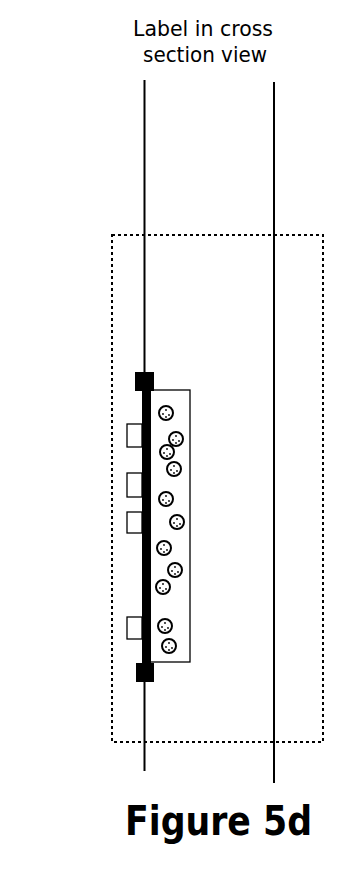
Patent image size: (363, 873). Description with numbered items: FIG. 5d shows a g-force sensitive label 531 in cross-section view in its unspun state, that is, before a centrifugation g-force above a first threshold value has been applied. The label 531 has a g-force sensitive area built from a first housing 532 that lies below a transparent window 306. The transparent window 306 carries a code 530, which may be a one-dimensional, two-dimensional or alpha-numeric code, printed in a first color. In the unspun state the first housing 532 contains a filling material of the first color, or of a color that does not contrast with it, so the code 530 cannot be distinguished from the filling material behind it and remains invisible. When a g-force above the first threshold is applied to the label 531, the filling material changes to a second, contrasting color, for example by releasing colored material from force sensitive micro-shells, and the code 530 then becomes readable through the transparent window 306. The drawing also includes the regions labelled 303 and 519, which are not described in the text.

The g-force sensitive label 531 is at (161, 138).
The label region 303 is at (113, 235).
The conductive end contacts 519 is at (163, 410).
The code 530 is at (127, 437).
The transparent window 306 is at (141, 580).
The first housing 532 is at (175, 603).